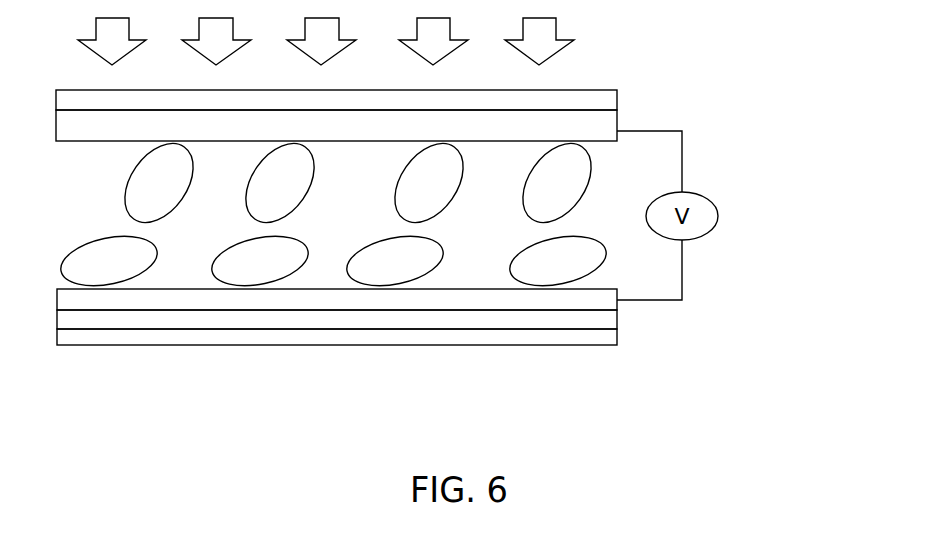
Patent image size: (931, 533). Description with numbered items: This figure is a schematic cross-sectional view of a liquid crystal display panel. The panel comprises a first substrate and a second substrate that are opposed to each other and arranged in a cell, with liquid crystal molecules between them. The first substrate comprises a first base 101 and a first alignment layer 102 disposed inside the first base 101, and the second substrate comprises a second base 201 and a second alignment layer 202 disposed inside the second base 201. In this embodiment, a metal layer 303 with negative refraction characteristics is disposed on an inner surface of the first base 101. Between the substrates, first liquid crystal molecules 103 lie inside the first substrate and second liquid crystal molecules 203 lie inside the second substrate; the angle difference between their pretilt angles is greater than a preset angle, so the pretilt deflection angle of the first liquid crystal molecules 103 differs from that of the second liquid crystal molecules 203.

The second base 201 is at (589, 97).
The second alignment layer 202 is at (590, 133).
The second liquid crystal molecules 203 is at (566, 178).
The first liquid crystal molecules 103 is at (575, 264).
The first alignment layer 102 is at (597, 300).
The metal layer 303 is at (598, 320).
The first base 101 is at (598, 340).